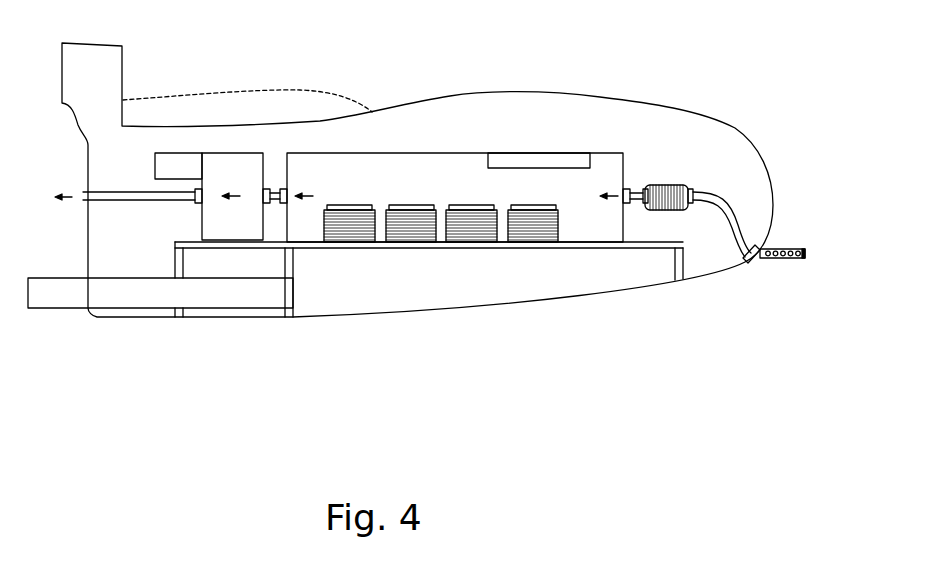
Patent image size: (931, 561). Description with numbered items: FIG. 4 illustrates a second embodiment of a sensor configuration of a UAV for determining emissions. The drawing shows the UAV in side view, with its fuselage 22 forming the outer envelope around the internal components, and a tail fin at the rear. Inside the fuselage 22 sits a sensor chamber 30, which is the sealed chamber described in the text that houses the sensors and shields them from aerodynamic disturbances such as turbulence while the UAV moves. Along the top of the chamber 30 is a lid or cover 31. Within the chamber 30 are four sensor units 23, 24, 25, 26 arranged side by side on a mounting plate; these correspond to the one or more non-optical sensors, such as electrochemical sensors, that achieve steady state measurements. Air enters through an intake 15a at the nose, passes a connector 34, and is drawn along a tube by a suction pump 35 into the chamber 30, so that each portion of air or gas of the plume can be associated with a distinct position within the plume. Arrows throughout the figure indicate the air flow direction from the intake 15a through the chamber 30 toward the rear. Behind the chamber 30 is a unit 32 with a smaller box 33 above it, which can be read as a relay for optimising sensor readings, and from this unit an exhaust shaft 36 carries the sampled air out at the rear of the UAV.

The fuselage 22 is at (631, 84).
The housing 30 is at (419, 142).
The housing cover 31 is at (540, 146).
The gearbox 32 is at (244, 196).
The controller 33 is at (178, 166).
The battery cell 23 is at (349, 213).
The battery cell 24 is at (411, 213).
The battery cell 25 is at (471, 213).
The battery cell 26 is at (533, 213).
The motor 35 is at (664, 168).
The connector 34 is at (761, 270).
The charging port 15a is at (786, 235).
The drive shaft 36 is at (80, 180).